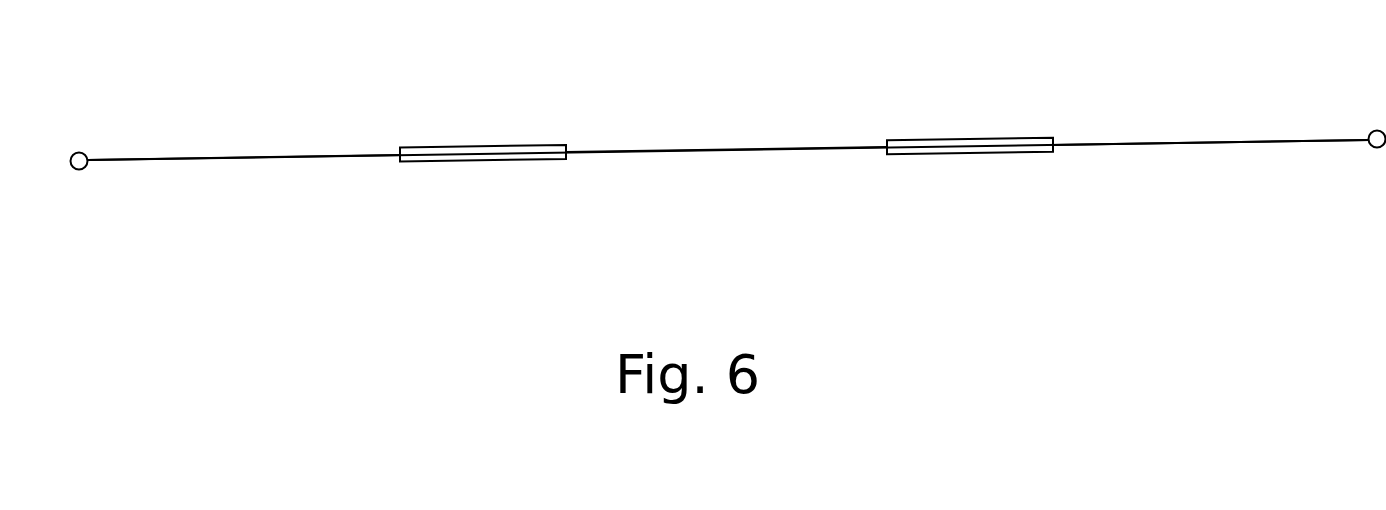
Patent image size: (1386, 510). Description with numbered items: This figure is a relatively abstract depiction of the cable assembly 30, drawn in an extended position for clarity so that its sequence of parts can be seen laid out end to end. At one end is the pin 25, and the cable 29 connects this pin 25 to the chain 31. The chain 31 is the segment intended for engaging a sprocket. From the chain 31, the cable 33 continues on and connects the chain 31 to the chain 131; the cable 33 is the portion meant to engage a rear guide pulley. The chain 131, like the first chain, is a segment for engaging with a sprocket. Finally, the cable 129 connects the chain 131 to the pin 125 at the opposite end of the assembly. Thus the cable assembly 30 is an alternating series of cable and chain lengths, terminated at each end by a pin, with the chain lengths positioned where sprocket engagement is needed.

The cable assembly 30 is at (704, 273).
The pin 125 is at (71, 153).
The cable 129 is at (190, 159).
The chain 131 is at (503, 138).
The cable 33 is at (727, 149).
The chain 31 is at (982, 131).
The cable 29 is at (1200, 142).
The pin 25 is at (1380, 128).